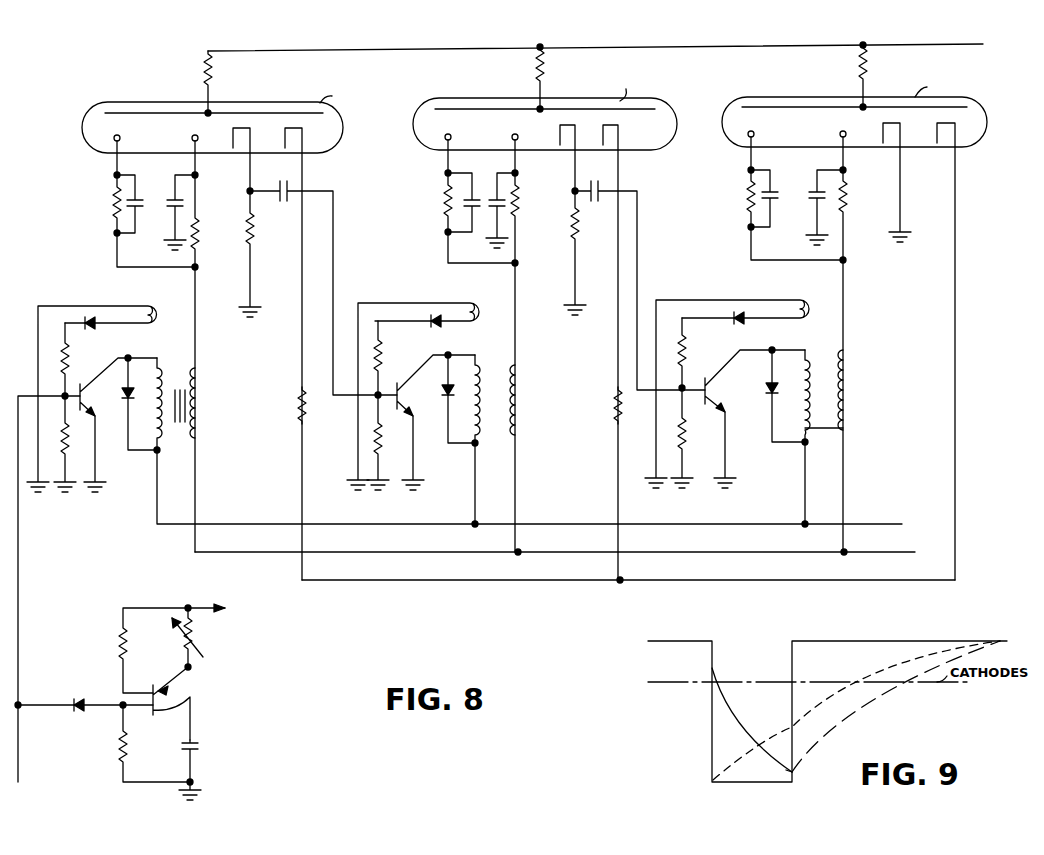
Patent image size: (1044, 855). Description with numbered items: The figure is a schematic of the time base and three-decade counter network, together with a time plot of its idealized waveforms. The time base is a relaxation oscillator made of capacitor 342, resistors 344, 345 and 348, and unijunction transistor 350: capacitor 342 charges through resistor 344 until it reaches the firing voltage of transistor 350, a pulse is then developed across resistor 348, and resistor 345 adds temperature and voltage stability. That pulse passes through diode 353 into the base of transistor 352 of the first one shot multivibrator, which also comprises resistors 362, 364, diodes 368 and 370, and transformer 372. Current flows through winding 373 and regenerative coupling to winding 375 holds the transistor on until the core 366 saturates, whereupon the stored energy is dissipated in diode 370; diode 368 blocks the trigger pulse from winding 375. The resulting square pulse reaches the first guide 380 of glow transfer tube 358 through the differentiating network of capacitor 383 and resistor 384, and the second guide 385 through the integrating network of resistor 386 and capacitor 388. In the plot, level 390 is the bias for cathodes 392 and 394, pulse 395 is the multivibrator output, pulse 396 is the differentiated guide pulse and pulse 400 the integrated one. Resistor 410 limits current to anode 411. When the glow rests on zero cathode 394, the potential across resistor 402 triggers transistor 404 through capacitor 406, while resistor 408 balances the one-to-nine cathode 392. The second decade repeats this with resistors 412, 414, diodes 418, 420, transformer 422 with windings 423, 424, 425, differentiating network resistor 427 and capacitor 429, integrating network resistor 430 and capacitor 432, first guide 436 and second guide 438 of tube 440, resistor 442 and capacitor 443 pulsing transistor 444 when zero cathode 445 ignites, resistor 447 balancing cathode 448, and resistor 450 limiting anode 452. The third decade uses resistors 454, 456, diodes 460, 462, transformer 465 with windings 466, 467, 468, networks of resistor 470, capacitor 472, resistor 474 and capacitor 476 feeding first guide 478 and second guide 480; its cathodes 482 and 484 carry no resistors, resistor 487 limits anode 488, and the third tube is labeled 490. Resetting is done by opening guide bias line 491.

In FIG. 8, the capacitor 342 is at (200, 746).
In FIG. 8, the resistor 344 is at (199, 644).
In FIG. 8, the resistor 345 is at (138, 636).
In FIG. 8, the resistor 348 is at (126, 762).
In FIG. 8, the unijunction transistor 350 is at (202, 692).
In FIG. 8, the transistor 352 is at (104, 410).
In FIG. 8, the diode 353 is at (80, 697).
In FIG. 8, the first decade counting tube 358 is at (252, 104).
In FIG. 8, the resistor 362 is at (66, 372).
In FIG. 8, the resistor 364 is at (68, 448).
In FIG. 8, the core 366 is at (186, 403).
In FIG. 8, the diode 368 is at (90, 316).
In FIG. 8, the diode 370 is at (133, 380).
In FIG. 8, the transformer 372 is at (176, 385).
In FIG. 8, the winding 373 is at (162, 440).
In FIG. 8, the winding 375 is at (198, 412).
In FIG. 8, the first guide 380 is at (118, 135).
In FIG. 8, the capacitor 383 is at (140, 196).
In FIG. 8, the resistor 384 is at (114, 205).
In FIG. 8, the second guide 385 is at (192, 135).
In FIG. 8, the resistor 386 is at (198, 236).
In FIG. 8, the capacitor 388 is at (168, 208).
In FIG. 9, the bias level 390 is at (820, 641).
In FIG. 8, the 1 to 9 cathode 392 is at (302, 148).
In FIG. 8, the zero cathode 394 is at (240, 148).
In FIG. 9, the pulse 395 is at (798, 782).
In FIG. 9, the differentiated pulse 396 is at (808, 703).
In FIG. 9, the integrated pulse 400 is at (878, 690).
In FIG. 8, the resistor 402 is at (253, 236).
In FIG. 8, the transistor 404 is at (440, 396).
In FIG. 8, the capacitor 406 is at (288, 182).
In FIG. 8, the resistor 408 is at (300, 432).
In FIG. 8, the resistor 410 is at (208, 84).
In FIG. 8, the anode 411 is at (344, 89).
In FIG. 8, the resistor 412 is at (380, 362).
In FIG. 8, the resistor 414 is at (381, 450).
In FIG. 8, the diode 418 is at (438, 324).
In FIG. 8, the diode 420 is at (450, 400).
In FIG. 8, the transformer 422 is at (499, 372).
In FIG. 8, the winding 423 is at (488, 296).
In FIG. 8, the winding 424 is at (478, 445).
In FIG. 8, the winding 425 is at (516, 420).
In FIG. 8, the resistor 427 is at (447, 212).
In FIG. 8, the capacitor 429 is at (474, 197).
In FIG. 8, the resistor 430 is at (517, 212).
In FIG. 8, the capacitor 432 is at (492, 208).
In FIG. 8, the first guide 436 is at (450, 134).
In FIG. 8, the second guide 438 is at (517, 134).
In FIG. 8, the glow transfer tube 440 is at (676, 108).
In FIG. 8, the resistor 442 is at (574, 240).
In FIG. 8, the capacitor 443 is at (597, 193).
In FIG. 8, the transistor 444 is at (740, 393).
In FIG. 8, the zero cathode 445 is at (560, 145).
In FIG. 8, the resistor 447 is at (617, 432).
In FIG. 8, the 1 to 9 cathode 448 is at (618, 145).
In FIG. 8, the resistor 450 is at (542, 80).
In FIG. 8, the anode 452 is at (641, 84).
In FIG. 8, the resistor 454 is at (684, 364).
In FIG. 8, the resistor 456 is at (698, 438).
In FIG. 8, the diode 460 is at (742, 322).
In FIG. 8, the diode 462 is at (770, 400).
In FIG. 8, the transformer 465 is at (840, 362).
In FIG. 8, the winding 466 is at (800, 302).
In FIG. 8, the winding 467 is at (838, 430).
In FIG. 8, the winding 468 is at (845, 393).
In FIG. 8, the resistor 470 is at (749, 210).
In FIG. 8, the capacitor 472 is at (774, 190).
In FIG. 8, the resistor 474 is at (845, 210).
In FIG. 8, the capacitor 476 is at (812, 202).
In FIG. 8, the first guide 478 is at (753, 136).
In FIG. 8, the second guide 480 is at (845, 137).
In FIG. 8, the cathode 482 is at (900, 140).
In FIG. 8, the cathode 484 is at (955, 140).
In FIG. 8, the resistor 487 is at (865, 75).
In FIG. 8, the anode 488 is at (939, 83).
In FIG. 8, the gas discharge tube 490 is at (985, 110).
In FIG. 8, the guide bias line 491 is at (866, 552).